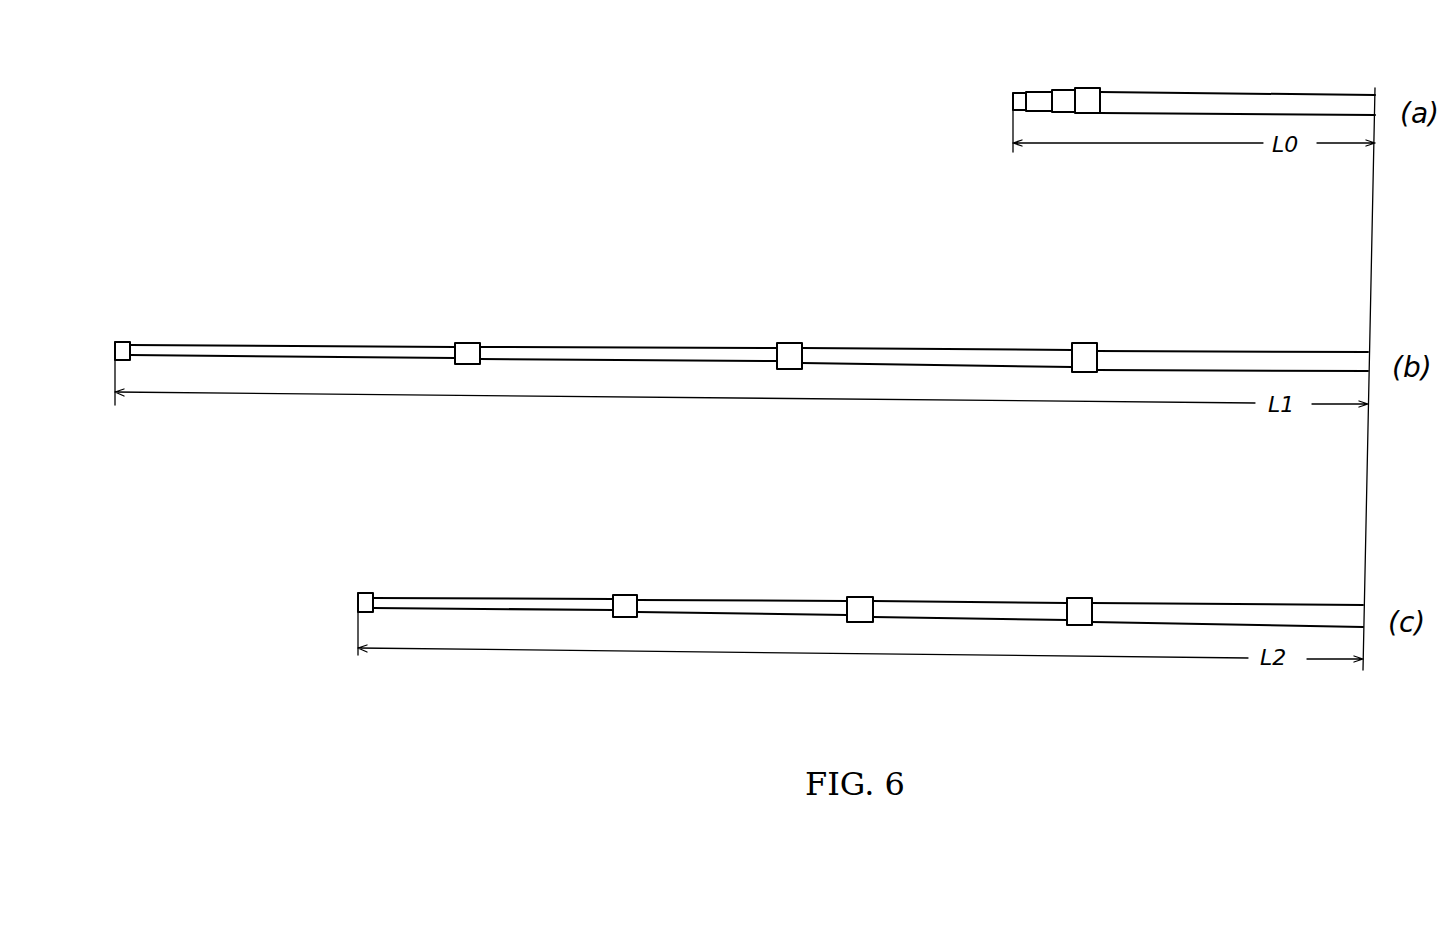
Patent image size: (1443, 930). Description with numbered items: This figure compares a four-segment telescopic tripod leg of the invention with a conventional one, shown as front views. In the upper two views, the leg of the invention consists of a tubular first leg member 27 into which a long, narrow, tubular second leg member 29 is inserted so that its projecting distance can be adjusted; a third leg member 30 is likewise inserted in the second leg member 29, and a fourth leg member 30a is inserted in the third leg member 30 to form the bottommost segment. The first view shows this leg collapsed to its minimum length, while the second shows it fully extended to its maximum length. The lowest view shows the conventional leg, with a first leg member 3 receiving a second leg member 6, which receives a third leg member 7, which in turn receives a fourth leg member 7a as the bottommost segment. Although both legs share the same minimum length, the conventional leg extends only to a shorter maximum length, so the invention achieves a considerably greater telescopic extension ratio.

The fourth leg member 30a is at (1031, 78).
The third leg member 30 is at (1076, 75).
The second leg member 29 is at (1108, 80).
The first leg member 27 is at (1217, 82).
The fourth leg member 7a is at (513, 590).
The third leg member 7 is at (755, 589).
The second leg member 6 is at (977, 590).
The first leg member 3 is at (1207, 591).